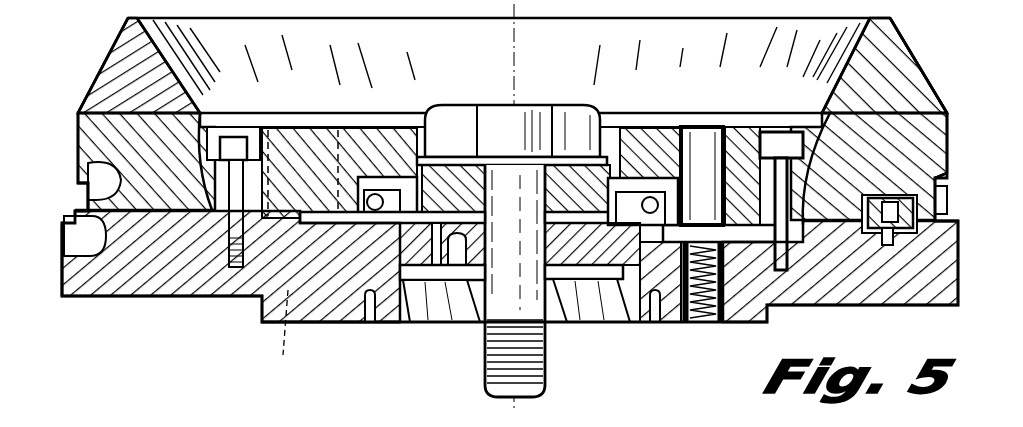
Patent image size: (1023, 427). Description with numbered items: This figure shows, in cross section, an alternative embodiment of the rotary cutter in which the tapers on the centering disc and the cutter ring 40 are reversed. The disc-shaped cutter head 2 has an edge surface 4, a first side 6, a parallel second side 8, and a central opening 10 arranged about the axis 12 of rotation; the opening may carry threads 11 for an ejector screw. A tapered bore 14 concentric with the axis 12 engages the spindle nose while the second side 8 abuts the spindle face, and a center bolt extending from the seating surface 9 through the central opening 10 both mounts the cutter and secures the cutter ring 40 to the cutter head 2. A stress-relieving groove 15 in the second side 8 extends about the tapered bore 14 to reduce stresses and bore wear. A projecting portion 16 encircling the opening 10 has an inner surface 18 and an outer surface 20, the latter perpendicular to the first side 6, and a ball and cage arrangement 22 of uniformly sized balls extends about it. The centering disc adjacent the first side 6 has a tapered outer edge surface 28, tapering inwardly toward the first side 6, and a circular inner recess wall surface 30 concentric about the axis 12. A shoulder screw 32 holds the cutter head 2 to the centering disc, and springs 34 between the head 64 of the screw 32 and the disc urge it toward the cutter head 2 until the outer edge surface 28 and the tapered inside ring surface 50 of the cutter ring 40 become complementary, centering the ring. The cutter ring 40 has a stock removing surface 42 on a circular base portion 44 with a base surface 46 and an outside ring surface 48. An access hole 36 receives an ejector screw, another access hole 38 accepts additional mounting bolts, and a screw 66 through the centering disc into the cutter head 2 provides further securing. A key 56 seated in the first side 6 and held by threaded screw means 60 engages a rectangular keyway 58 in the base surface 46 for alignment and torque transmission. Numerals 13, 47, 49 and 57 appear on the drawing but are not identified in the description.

The cutter head 2 is at (510, 274).
The edge surface 4 is at (48, 293).
The first side 6 is at (45, 250).
The second side 8 is at (331, 342).
The seating surface 9 is at (512, 131).
The central opening 10 is at (515, 310).
The threads 11 is at (459, 304).
The axis 12 is at (512, 228).
The pin 13 is at (436, 288).
The tapered bore 14 is at (515, 296).
The stress-relieving groove 15 is at (508, 329).
The projecting portion 16 is at (698, 148).
The inner surface 18 is at (460, 144).
The outer surface 20 is at (516, 163).
The ball and cage arrangement 22 is at (643, 154).
The tapered outer edge surface 28 is at (233, 166).
The circular inner recess wall surface 30 is at (702, 154).
The shoulder screw 32 is at (802, 171).
The springs 34 is at (742, 149).
The access hole 36 is at (703, 301).
The access hole 38 is at (270, 327).
The cutter ring 40 is at (936, 65).
The stock removing surface 42 is at (890, 65).
The circular base portion 44 is at (895, 169).
The base surface 46 is at (126, 161).
The shoulder 47 is at (47, 190).
The outside ring surface 48 is at (118, 68).
The lower shoulder 49 is at (47, 213).
The tapered inside ring surface 50 is at (306, 126).
The key 56 is at (968, 196).
The gap 57 is at (968, 217).
The keyway 58 is at (967, 163).
The threaded screw means 60 is at (889, 265).
The head 64 is at (781, 115).
The screw 66 is at (334, 146).